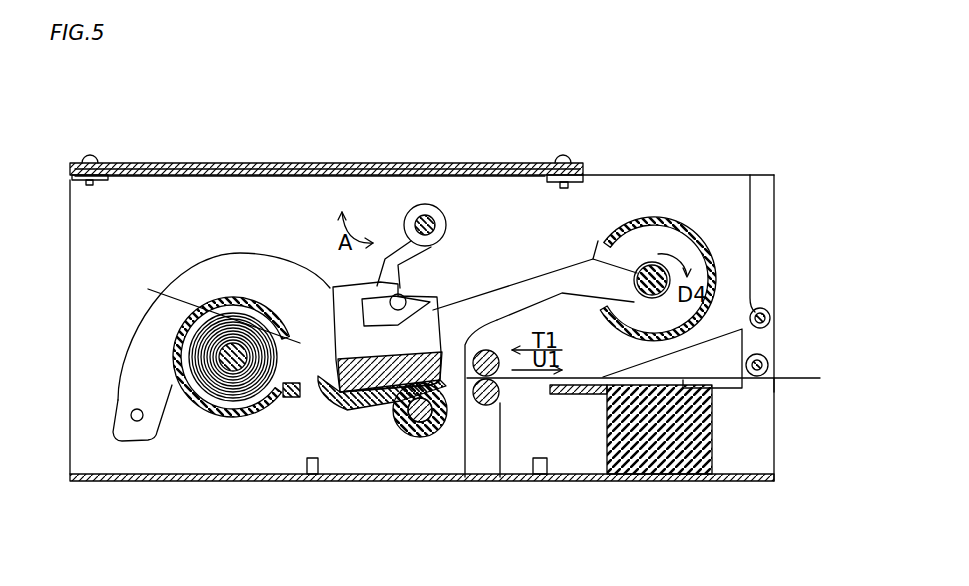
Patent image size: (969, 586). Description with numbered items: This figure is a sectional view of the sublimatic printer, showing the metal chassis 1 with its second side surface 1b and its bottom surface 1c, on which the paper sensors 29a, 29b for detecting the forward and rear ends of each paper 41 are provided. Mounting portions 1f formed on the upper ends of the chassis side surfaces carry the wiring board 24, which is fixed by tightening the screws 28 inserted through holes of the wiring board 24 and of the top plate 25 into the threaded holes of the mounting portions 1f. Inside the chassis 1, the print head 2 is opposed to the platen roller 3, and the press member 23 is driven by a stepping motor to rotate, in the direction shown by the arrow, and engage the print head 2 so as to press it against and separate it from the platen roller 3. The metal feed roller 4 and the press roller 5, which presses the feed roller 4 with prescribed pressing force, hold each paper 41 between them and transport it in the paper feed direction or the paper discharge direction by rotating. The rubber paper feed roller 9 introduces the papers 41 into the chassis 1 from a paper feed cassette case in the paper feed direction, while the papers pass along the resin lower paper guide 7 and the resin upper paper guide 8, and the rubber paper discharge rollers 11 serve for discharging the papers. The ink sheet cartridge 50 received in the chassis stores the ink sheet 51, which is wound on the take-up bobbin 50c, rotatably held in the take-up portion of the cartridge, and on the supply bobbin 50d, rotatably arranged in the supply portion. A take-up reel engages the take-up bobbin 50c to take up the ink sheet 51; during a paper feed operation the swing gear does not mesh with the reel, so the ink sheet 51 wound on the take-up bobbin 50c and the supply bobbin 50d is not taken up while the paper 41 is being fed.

The chassis 1 is at (760, 174).
The second side surface 1b is at (200, 202).
The bottom surface 1c is at (164, 473).
The mounting portions 1f is at (70, 177).
The print head 2 is at (308, 249).
The platen roller 3 is at (407, 433).
The feed roller 4 is at (497, 405).
The press roller 5 is at (464, 478).
The lower paper guide 7 is at (623, 455).
The upper paper guide 8 is at (690, 350).
The paper feed roller 9 is at (775, 383).
The paper discharge rollers 11 is at (750, 175).
The press member 23 is at (432, 206).
The wiring board 24 is at (157, 163).
The top plate 25 is at (230, 163).
The screws 28 is at (88, 152).
The paper sensor 29a is at (310, 480).
The paper sensor 29b is at (540, 480).
The papers 41 is at (810, 377).
The ink sheet cartridge 50 is at (686, 207).
The take-up bobbin 50c is at (652, 262).
The supply bobbin 50d is at (193, 320).
The ink sheet 51 is at (560, 292).